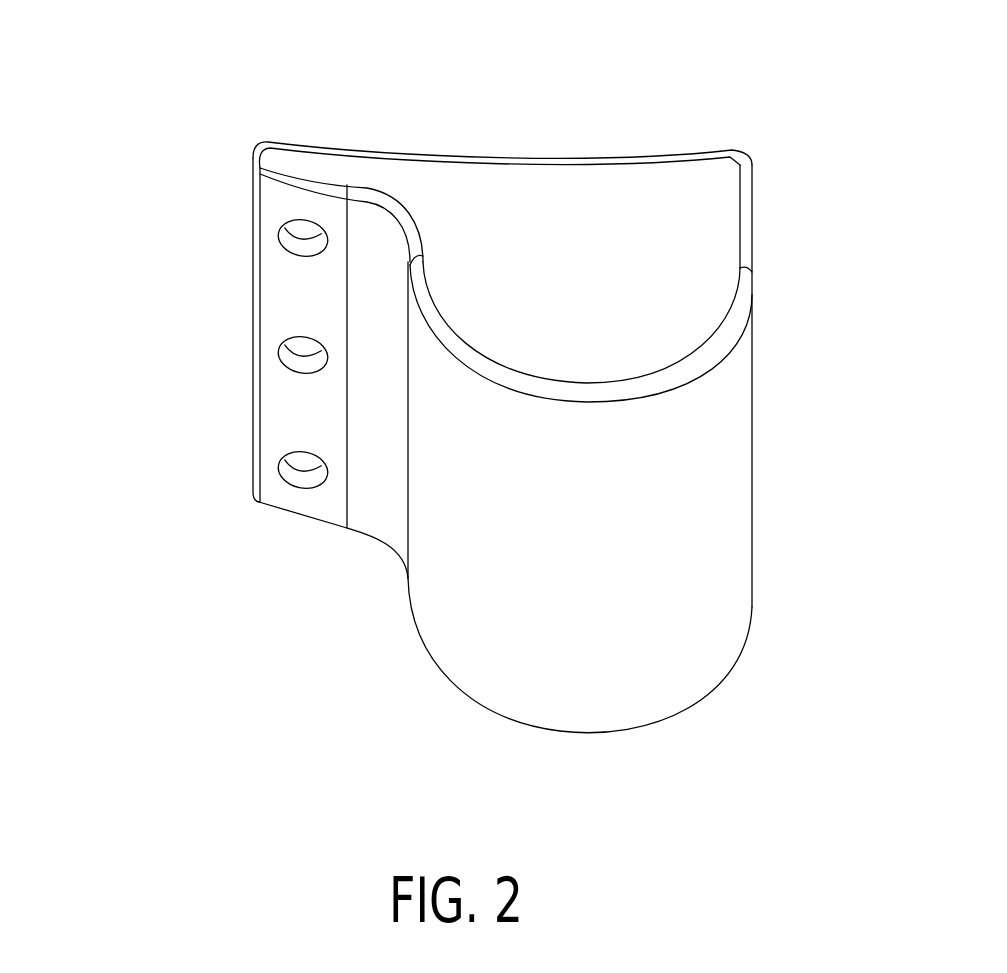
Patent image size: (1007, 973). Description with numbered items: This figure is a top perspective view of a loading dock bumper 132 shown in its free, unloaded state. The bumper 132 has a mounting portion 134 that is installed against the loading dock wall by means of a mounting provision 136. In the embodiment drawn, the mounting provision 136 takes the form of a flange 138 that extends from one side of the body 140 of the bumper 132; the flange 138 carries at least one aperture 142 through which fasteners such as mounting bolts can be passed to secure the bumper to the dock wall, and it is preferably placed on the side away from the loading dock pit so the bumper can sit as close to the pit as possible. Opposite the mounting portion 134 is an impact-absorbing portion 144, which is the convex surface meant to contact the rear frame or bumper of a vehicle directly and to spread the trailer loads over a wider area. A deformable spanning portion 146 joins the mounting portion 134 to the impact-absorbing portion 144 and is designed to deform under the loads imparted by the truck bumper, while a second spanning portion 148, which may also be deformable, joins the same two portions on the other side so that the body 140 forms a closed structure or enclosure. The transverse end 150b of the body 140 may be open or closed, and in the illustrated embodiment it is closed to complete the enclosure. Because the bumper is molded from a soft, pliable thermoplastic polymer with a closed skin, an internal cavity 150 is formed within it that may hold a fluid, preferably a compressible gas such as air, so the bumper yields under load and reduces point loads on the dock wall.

The loading dock bumper 132 is at (805, 91).
The mounting portion 134 is at (532, 157).
The mounting provision 136 is at (118, 133).
The flange 138 is at (280, 297).
The body 140 is at (581, 332).
The aperture 142 is at (292, 241).
The impact-absorbing portion 144 is at (683, 479).
The deformable spanning portion 146 is at (753, 223).
The second spanning portion 148 is at (367, 485).
The internal cavity 150 is at (470, 197).
The transverse end 150b is at (600, 732).